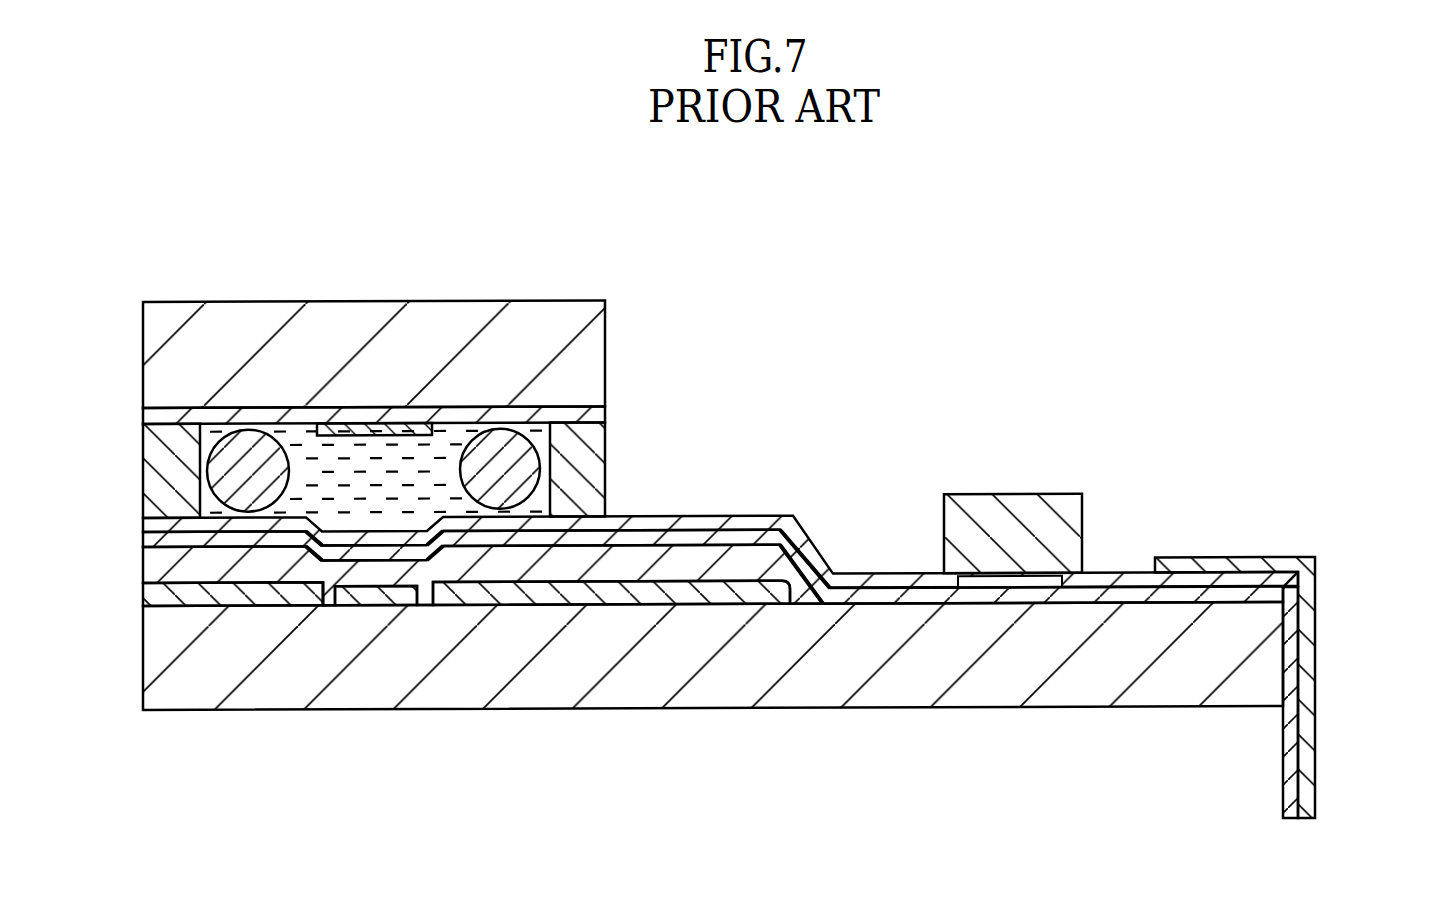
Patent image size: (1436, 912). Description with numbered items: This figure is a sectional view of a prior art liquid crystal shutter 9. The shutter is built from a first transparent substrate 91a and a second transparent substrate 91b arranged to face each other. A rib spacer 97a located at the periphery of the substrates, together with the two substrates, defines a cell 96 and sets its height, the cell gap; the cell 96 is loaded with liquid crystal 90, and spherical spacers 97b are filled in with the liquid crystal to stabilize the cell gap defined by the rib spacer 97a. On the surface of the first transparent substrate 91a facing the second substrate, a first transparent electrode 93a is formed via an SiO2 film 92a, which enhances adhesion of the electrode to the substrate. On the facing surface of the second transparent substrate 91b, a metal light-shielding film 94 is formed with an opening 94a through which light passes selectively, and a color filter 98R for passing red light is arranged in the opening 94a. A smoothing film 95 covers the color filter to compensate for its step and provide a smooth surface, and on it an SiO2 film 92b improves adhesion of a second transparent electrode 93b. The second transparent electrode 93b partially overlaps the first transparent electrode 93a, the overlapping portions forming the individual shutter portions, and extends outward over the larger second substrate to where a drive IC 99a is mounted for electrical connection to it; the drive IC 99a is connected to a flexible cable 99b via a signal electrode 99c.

The liquid crystal shutter 9 is at (744, 301).
The liquid crystal 90 is at (353, 457).
The first transparent substrate 91a is at (267, 325).
The second transparent substrate 91b is at (722, 692).
The SiO2 film 92a is at (607, 413).
The SiO2 film 92b is at (869, 593).
The first transparent electrode 93a is at (413, 427).
The second transparent electrode 93b is at (755, 521).
The metal light-shielding film 94 is at (203, 598).
The opening 94a is at (324, 600).
The smoothing film 95 is at (158, 555).
The cell 96 is at (205, 458).
The rib spacer 97a is at (155, 449).
The spherical spacers 97b is at (520, 470).
The color filter 98R is at (393, 607).
The drive IC 99a is at (1048, 494).
The flexible cable 99b is at (1319, 604).
The signal electrode 99c is at (1292, 703).